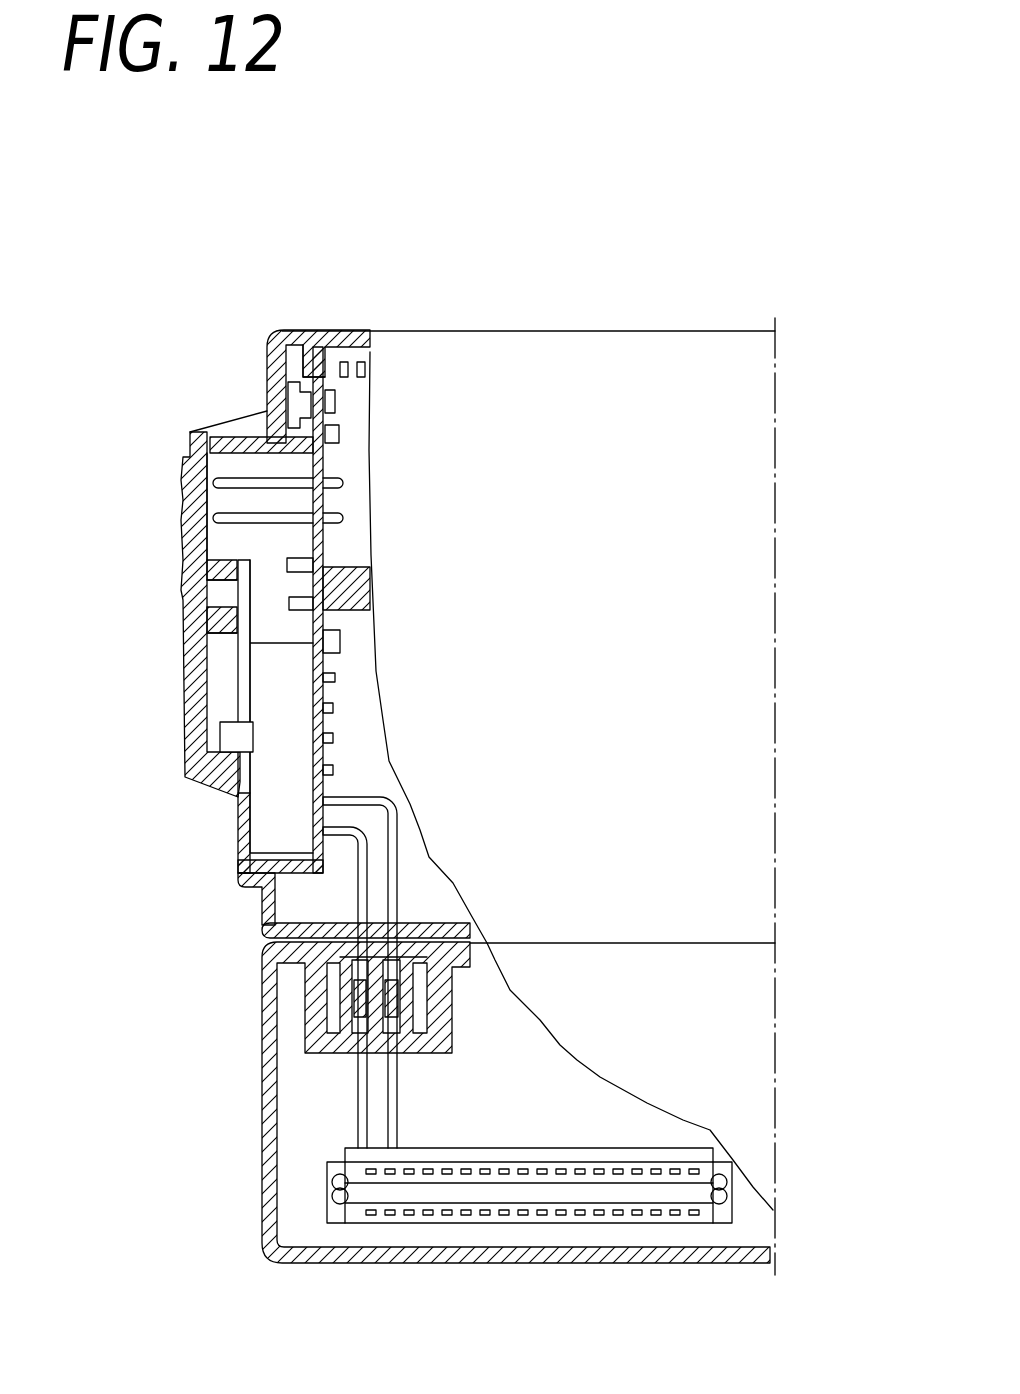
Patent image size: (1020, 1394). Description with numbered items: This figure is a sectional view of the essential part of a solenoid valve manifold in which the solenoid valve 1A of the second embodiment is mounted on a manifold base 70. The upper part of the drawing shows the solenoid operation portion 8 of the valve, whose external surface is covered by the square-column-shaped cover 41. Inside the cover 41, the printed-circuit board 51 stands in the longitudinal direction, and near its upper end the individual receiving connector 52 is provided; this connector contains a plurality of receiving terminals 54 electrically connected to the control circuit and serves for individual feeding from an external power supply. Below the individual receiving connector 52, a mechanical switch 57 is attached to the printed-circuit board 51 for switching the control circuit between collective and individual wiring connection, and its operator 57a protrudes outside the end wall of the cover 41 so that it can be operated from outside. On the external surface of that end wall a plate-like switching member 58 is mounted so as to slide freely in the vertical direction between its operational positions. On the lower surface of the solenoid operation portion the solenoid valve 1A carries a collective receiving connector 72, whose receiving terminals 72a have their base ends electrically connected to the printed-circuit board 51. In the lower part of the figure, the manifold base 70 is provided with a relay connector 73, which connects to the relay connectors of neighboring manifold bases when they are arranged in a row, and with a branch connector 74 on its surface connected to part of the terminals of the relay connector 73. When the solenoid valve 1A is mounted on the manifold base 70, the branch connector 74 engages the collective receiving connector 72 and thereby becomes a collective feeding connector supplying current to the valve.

The solenoid valve 1A is at (630, 170).
The solenoid operation portion 8 is at (462, 283).
The cover 41 is at (411, 331).
The printed-circuit board 51 is at (283, 588).
The individual receiving connector 52 is at (235, 410).
The receiving terminals 54 is at (243, 510).
The switch 57 is at (280, 818).
The operator 57a is at (240, 735).
The switching member 58 is at (182, 557).
The manifold base 70 is at (834, 955).
The collective receiving connector 72 is at (333, 1003).
The receiving terminals 72a is at (372, 916).
The relay connector 73 is at (500, 1228).
The branch connector 74 is at (320, 1058).